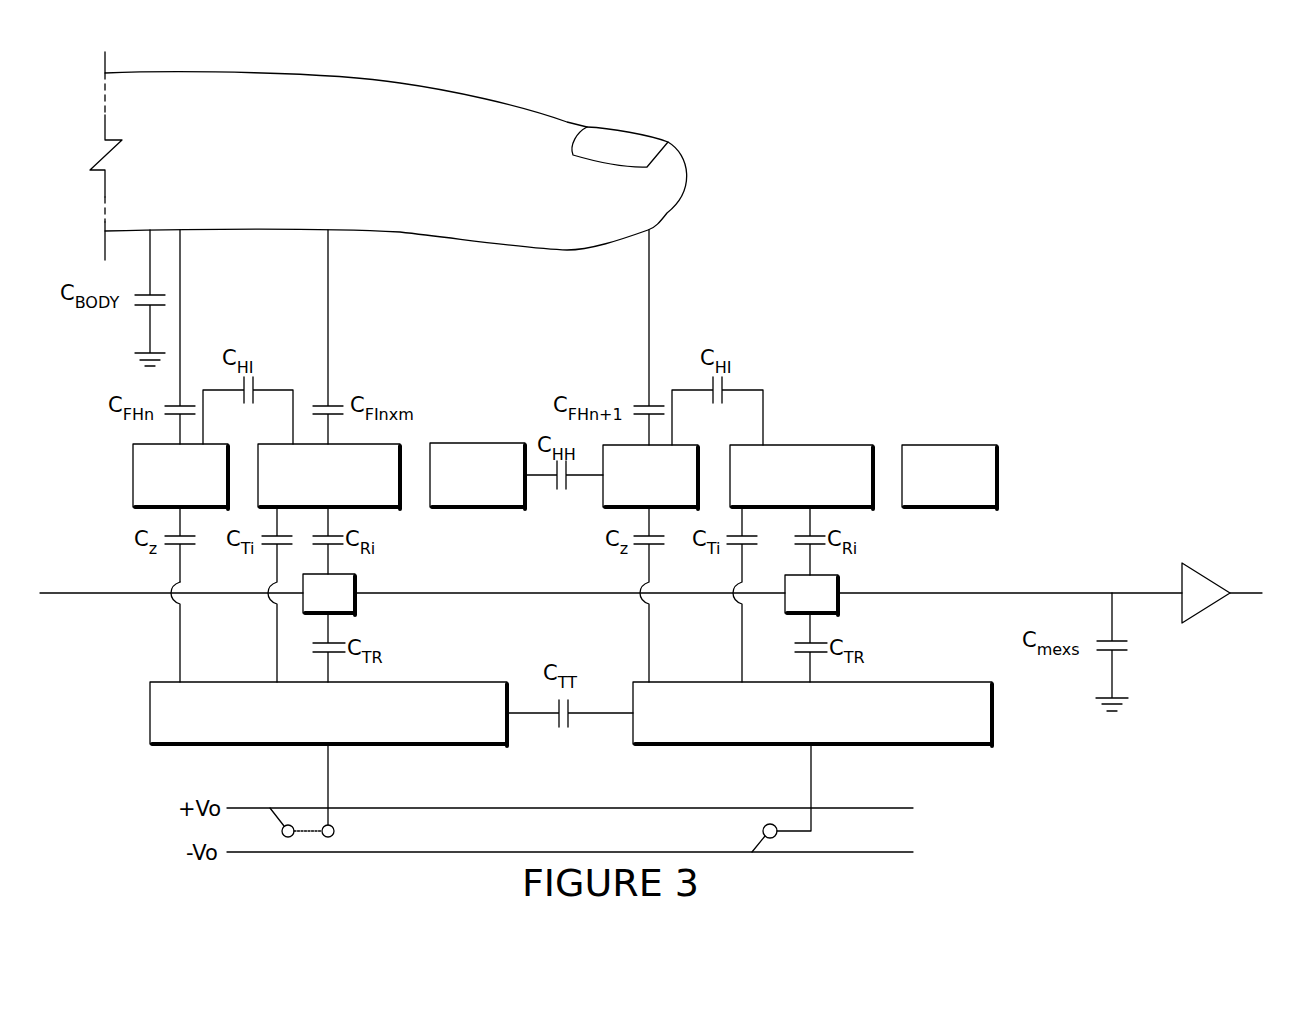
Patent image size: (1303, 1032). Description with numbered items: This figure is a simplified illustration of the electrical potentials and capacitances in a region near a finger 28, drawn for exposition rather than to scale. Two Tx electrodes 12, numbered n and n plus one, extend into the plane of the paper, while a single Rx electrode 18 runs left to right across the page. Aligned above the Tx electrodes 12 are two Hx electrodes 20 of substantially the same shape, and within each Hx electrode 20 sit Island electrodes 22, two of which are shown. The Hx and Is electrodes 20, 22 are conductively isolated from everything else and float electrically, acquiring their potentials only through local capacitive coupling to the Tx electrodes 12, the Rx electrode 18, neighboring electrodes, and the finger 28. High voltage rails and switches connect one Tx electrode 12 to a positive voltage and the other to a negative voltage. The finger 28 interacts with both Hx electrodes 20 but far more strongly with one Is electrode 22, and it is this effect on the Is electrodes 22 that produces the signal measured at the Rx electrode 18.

The finger 28 is at (478, 245).
The Hx electrode 20 is at (132, 474).
The Island (Is) electrode 22 is at (378, 506).
The Tx electrode 12 is at (150, 712).
The Rx electrode 18 is at (1064, 592).